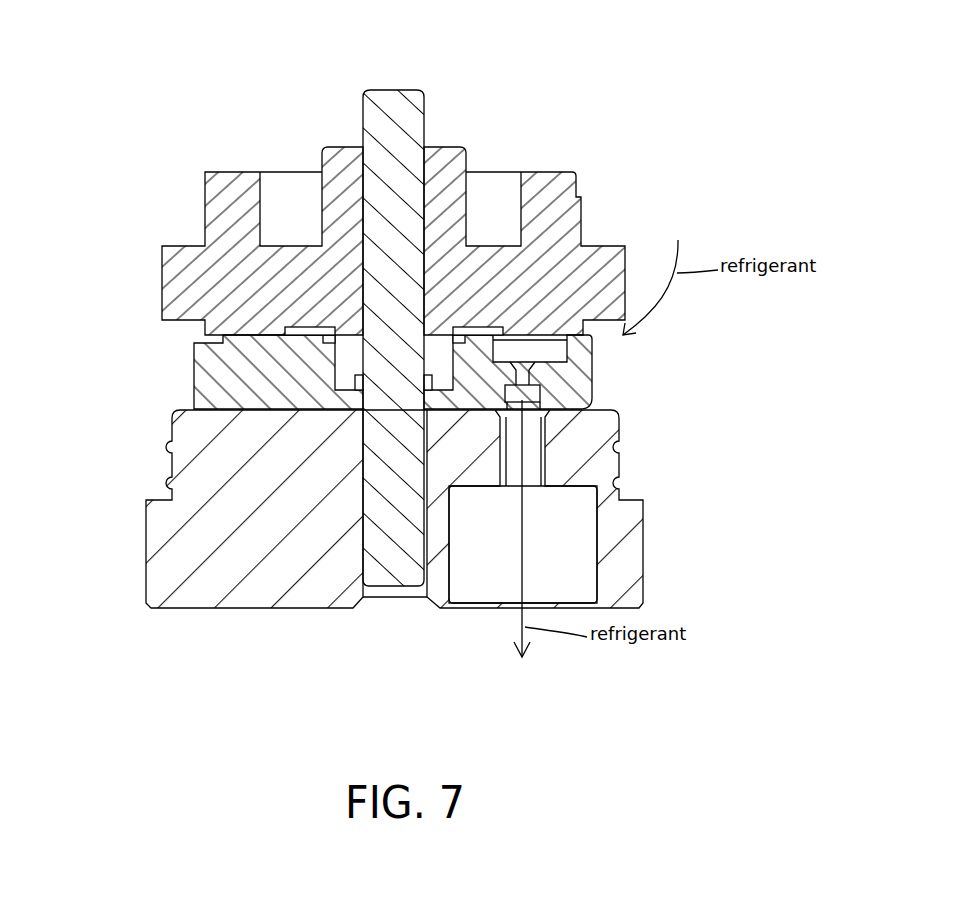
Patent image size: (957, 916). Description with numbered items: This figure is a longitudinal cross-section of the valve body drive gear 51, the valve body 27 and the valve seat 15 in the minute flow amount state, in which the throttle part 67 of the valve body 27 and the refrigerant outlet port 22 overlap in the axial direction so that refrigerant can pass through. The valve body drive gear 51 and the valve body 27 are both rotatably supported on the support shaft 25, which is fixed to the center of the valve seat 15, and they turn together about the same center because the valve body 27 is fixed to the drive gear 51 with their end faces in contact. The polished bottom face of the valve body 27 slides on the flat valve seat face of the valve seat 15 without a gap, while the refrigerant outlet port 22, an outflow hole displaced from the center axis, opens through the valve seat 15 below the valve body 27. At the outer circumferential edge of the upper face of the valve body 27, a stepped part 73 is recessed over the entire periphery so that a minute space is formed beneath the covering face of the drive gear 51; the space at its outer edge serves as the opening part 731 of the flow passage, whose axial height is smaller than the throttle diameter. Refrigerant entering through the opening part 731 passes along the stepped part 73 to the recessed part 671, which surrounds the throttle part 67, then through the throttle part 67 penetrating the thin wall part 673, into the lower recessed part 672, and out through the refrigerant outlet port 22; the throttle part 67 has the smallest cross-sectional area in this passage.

The valve seat 15 is at (166, 473).
The refrigerant outlet port 22 is at (580, 560).
The support shaft 25 is at (424, 107).
The valve body 27 is at (188, 383).
The valve body drive gear 51 is at (198, 208).
The throttle part 67 is at (600, 400).
The recessed part 671 is at (567, 356).
The recessed part 672 is at (548, 405).
The thin wall part 673 is at (531, 376).
The stepped part 73 is at (397, 348).
The opening part 731 is at (205, 336).